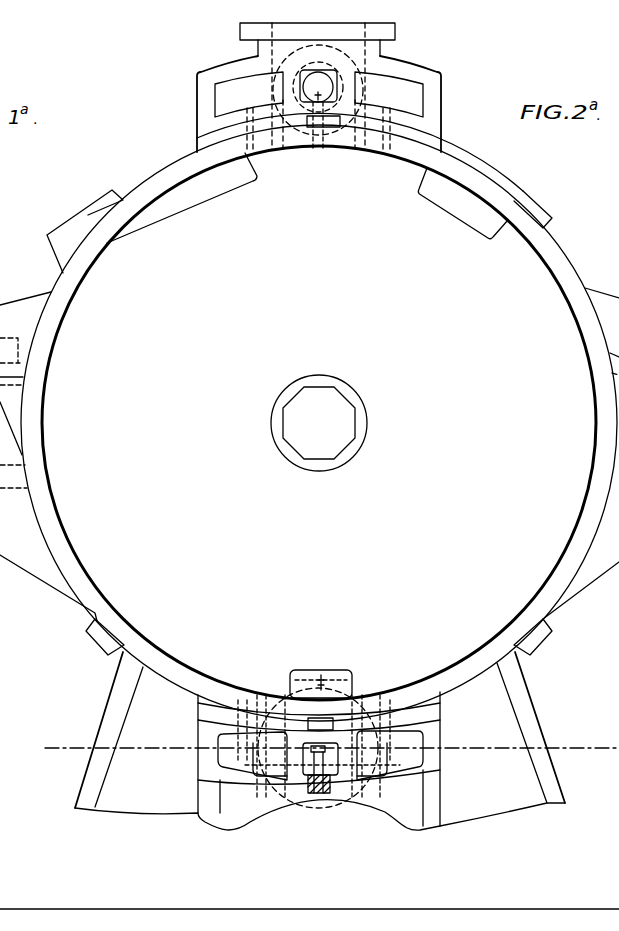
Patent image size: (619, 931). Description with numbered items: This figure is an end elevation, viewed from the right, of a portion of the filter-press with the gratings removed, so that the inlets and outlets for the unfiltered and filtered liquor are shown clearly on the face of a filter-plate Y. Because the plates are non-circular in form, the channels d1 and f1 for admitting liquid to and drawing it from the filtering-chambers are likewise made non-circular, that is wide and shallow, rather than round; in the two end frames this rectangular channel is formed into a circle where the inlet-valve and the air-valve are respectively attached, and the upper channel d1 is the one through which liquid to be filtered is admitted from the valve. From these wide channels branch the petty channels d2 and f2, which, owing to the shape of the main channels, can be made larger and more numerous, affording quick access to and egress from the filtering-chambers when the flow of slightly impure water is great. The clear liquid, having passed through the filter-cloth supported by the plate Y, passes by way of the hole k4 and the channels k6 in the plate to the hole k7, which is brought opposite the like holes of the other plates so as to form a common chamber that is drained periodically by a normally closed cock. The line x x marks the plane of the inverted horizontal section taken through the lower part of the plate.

The channel d1 is at (324, 78).
The petty channel d2 is at (312, 133).
The filter-plate Y is at (319, 423).
The petty channel f2 is at (385, 674).
The channel f1 is at (225, 760).
The hole k4 is at (338, 668).
The channel k6 is at (328, 712).
The hole k7 is at (302, 776).
The line x x is at (330, 747).